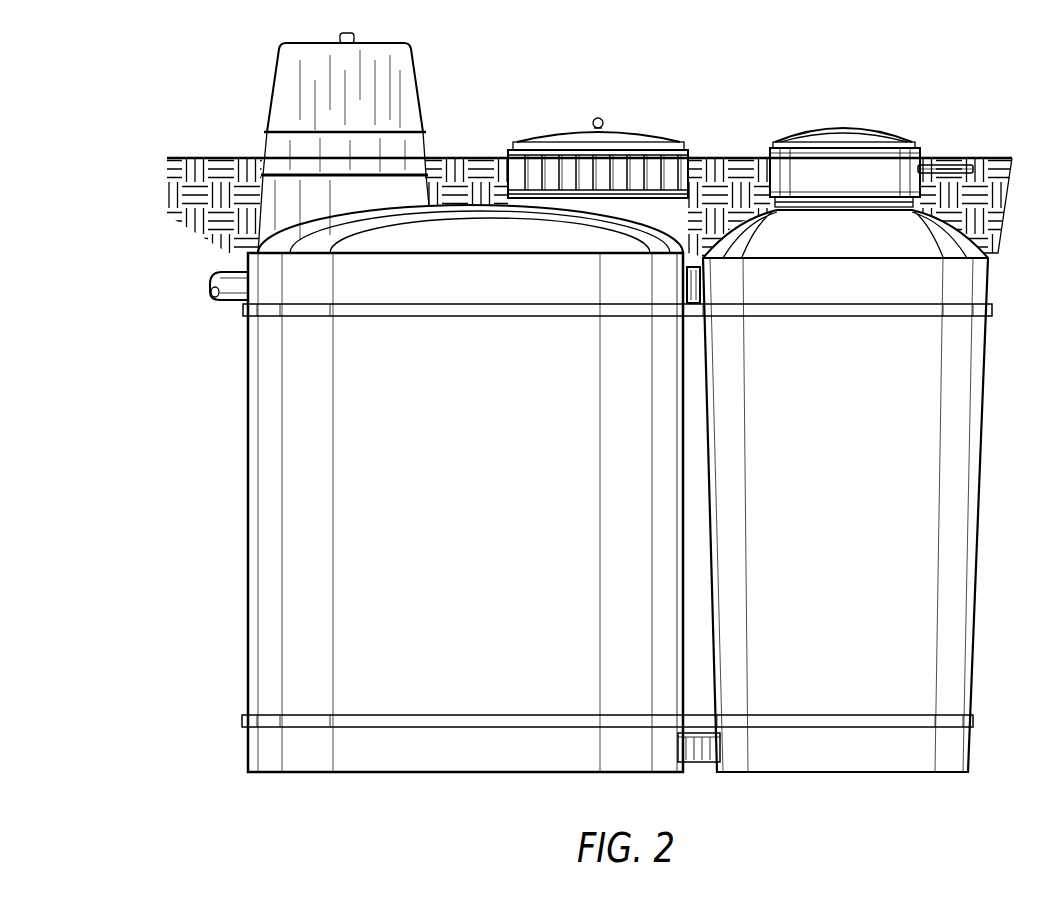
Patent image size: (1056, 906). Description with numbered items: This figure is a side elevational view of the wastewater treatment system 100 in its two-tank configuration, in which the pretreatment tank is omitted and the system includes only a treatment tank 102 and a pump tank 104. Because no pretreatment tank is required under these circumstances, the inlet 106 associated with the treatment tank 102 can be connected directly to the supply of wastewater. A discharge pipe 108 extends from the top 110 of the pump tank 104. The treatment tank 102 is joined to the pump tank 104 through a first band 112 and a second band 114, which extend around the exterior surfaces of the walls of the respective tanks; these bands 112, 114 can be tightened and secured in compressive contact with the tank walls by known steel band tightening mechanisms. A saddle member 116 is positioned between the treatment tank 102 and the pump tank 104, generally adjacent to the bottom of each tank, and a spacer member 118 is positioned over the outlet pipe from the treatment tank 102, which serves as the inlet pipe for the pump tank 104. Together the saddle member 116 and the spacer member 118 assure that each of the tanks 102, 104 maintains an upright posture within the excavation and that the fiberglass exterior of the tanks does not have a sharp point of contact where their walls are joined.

The system 100 is at (773, 102).
The treatment tank 102 is at (255, 525).
The pump tank 104 is at (968, 556).
The inlet 106 is at (217, 303).
The discharge pipe 108 is at (967, 160).
The top 110 is at (907, 132).
The first band 112 is at (442, 718).
The second band 114 is at (497, 313).
The saddle member 116 is at (705, 762).
The spacer member 118 is at (700, 285).